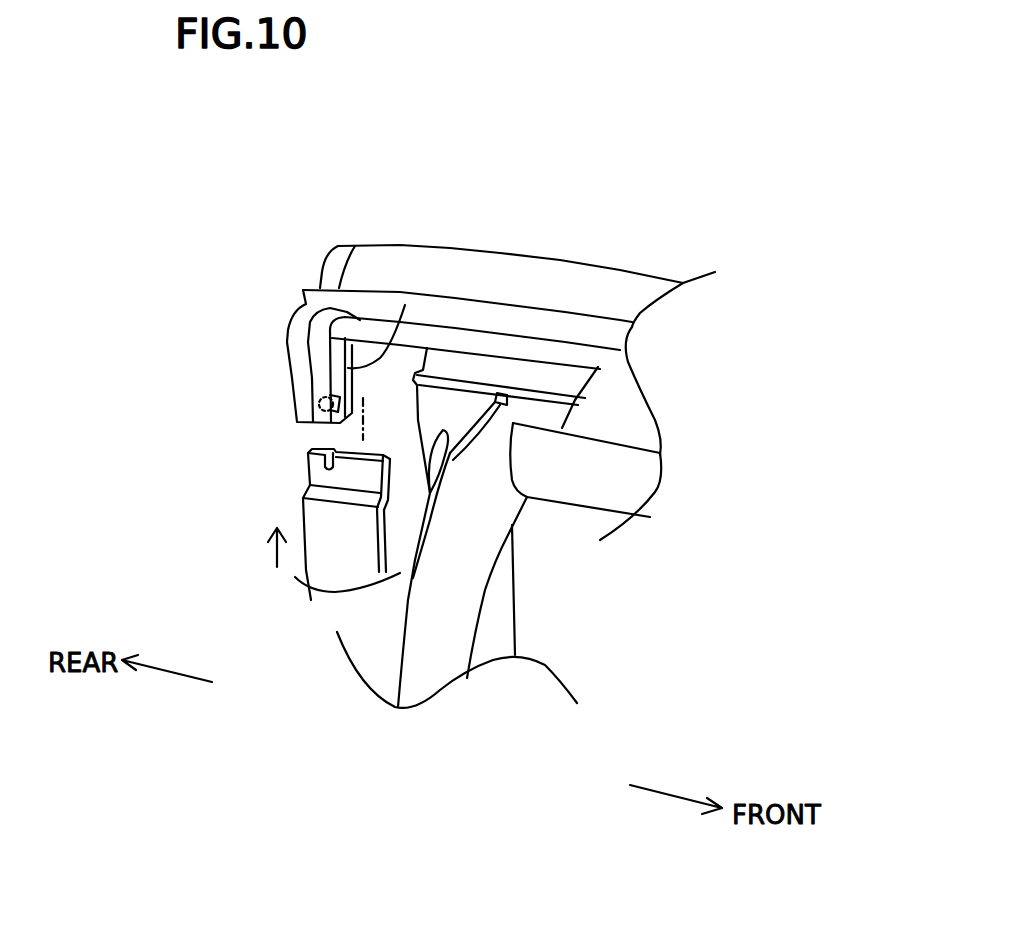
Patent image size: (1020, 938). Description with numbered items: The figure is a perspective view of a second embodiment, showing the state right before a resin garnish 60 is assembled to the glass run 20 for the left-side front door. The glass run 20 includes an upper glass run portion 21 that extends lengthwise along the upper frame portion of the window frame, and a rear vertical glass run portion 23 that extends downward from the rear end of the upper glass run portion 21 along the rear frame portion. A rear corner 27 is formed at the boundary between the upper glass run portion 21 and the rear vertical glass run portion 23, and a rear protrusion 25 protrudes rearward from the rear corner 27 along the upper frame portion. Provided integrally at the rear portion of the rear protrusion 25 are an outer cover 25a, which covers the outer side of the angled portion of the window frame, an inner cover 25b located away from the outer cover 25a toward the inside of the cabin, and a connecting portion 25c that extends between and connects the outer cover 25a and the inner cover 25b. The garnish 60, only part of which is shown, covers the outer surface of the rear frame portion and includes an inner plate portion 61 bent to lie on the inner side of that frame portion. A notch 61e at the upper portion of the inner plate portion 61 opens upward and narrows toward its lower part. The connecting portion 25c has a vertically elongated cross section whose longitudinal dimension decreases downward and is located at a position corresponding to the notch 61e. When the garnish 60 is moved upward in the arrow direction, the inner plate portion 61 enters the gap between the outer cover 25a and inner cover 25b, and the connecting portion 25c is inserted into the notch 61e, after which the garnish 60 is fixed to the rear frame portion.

The glass run for left-side front door 20 is at (581, 253).
The upper glass run portion 21 is at (623, 408).
The rear vertical glass run portion 23 is at (452, 645).
The rear protrusion 25 is at (372, 268).
The outer cover 25a is at (405, 305).
The inner cover 25b is at (297, 366).
The connecting portion 25c is at (313, 408).
The rear corner 27 is at (495, 500).
The garnish 60 is at (301, 560).
The inner plate portion 61 is at (317, 600).
The notch 61e is at (325, 463).